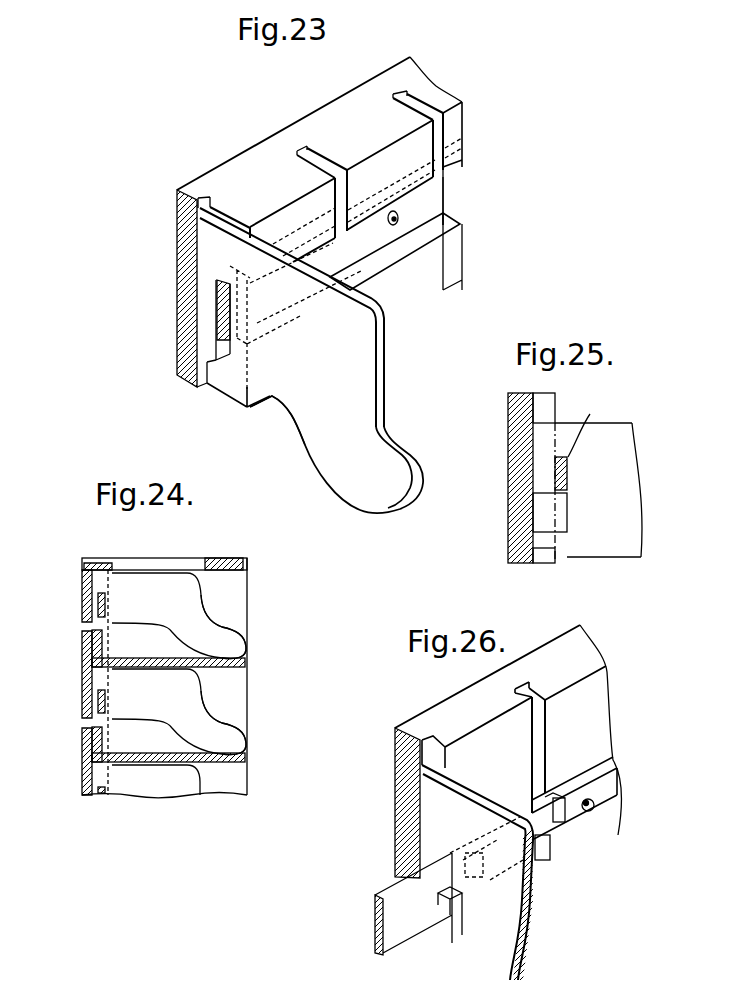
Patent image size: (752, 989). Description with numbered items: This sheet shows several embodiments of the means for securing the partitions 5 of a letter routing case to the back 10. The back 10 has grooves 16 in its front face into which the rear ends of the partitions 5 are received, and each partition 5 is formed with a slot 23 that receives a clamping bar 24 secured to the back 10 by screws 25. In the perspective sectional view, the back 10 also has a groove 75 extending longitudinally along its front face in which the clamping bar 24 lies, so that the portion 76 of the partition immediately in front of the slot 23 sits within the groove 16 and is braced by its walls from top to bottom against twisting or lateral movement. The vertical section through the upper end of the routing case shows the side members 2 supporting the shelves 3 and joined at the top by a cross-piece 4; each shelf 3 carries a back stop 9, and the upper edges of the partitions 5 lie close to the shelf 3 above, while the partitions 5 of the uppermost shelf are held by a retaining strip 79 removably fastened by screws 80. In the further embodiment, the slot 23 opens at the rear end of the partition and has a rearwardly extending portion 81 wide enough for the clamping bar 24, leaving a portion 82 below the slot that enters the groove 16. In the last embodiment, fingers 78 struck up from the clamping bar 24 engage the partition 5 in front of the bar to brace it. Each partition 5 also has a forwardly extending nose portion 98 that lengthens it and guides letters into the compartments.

In FIG. 23, the back 10 is at (250, 163).
In FIG. 26, the back 10 is at (395, 828).
In FIG. 23, the groove 16 is at (215, 200).
In FIG. 25, the groove 16 is at (533, 402).
In FIG. 26, the groove 16 is at (428, 742).
In FIG. 23, the slot 23 is at (216, 307).
In FIG. 25, the slot 23 is at (568, 477).
In FIG. 23, the clamping bar 24 is at (441, 187).
In FIG. 25, the clamping bar 24 is at (585, 425).
In FIG. 23, the screw 25 is at (398, 216).
In FIG. 26, the screw 25 is at (603, 782).
In FIG. 23, the groove 75 is at (390, 257).
In FIG. 23, the portion of partition 76 is at (238, 362).
In FIG. 23, the partition 5 is at (360, 341).
In FIG. 24, the partition 5 is at (165, 598).
In FIG. 25, the partition 5 is at (625, 510).
In FIG. 26, the partition 5 is at (510, 940).
In FIG. 23, the nose portion 98 is at (398, 488).
In FIG. 24, the nose portion 98 is at (220, 635).
In FIG. 24, the side member 2 is at (235, 605).
In FIG. 24, the shelf 3 is at (230, 659).
In FIG. 24, the cross-piece 4 is at (247, 560).
In FIG. 24, the back stop 9 is at (92, 645).
In FIG. 24, the retaining strip 79 is at (99, 568).
In FIG. 24, the screw 80 is at (92, 566).
In FIG. 25, the rearwardly extending portion 81 is at (543, 517).
In FIG. 25, the portion of partition 82 is at (545, 550).
In FIG. 26, the finger 78 is at (547, 853).